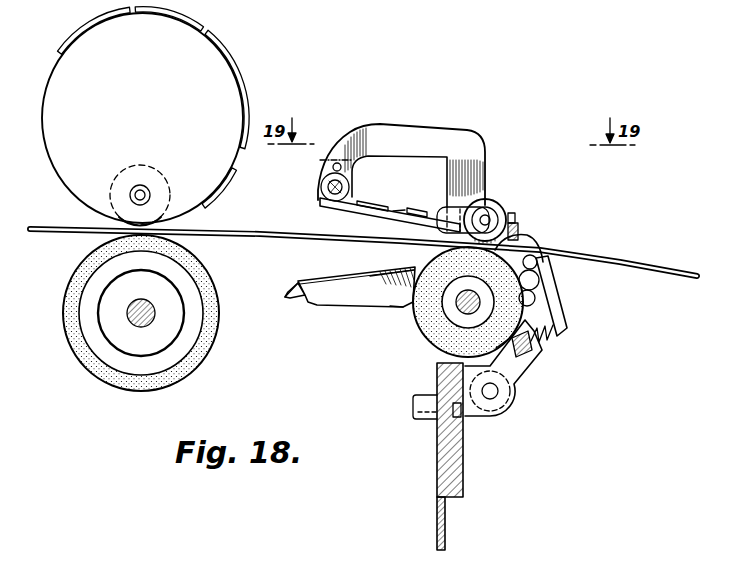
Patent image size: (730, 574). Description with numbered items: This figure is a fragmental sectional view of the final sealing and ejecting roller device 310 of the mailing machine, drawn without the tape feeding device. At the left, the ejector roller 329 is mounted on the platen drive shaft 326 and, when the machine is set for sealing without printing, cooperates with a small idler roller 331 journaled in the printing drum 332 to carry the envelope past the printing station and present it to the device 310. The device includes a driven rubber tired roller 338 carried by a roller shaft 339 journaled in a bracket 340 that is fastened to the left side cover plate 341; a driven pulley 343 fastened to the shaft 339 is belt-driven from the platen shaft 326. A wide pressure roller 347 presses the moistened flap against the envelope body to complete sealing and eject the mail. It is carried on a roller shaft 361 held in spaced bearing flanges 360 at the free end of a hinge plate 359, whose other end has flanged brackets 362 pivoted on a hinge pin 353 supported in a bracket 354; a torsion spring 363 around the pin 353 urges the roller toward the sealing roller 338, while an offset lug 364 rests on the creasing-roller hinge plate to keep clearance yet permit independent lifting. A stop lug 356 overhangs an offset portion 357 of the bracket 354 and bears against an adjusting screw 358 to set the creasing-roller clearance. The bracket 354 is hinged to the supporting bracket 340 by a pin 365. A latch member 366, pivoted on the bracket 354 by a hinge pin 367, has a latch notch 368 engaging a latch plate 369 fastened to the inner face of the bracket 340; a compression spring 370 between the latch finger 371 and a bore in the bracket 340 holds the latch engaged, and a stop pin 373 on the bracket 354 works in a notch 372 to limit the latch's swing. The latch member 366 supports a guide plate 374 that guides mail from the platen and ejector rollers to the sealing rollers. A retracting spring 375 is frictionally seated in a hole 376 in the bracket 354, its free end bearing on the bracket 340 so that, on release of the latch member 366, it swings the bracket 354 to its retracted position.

The final sealing and ejecting roller device 310 is at (311, 360).
The platen drive shaft 326 is at (134, 321).
The ejector roller 329 is at (216, 335).
The idler roller 331 is at (173, 224).
The printing drum 332 is at (210, 74).
The driven rubber tired roller 338 is at (448, 329).
The roller shaft 339 is at (437, 361).
The bracket 340 is at (464, 450).
The left side cover plate 341 is at (446, 527).
The driven pulley 343 is at (446, 311).
The pressure roller 347 is at (492, 218).
The hinge pin 353 is at (322, 203).
The bracket 354 is at (436, 137).
The stop lug 356 is at (515, 215).
The offset portion 357 is at (528, 242).
The adjusting screw 358 is at (518, 224).
The hinge plate 359 is at (393, 211).
The bearing flanges 360 is at (487, 212).
The roller shaft 361 is at (505, 208).
The flanged brackets 362 is at (357, 200).
The torsion spring 363 is at (353, 167).
The offset lug 364 is at (415, 213).
The pin 365 is at (500, 394).
The latch member 366 is at (345, 306).
The hinge pin 367 is at (536, 293).
The latch notch 368 is at (408, 292).
The latch plate 369 is at (428, 270).
The compression spring 370 is at (549, 342).
The latch finger 371 is at (560, 324).
The notch 372 is at (540, 279).
The stop pin 373 is at (538, 256).
The guide plate 374 is at (323, 278).
The retracting spring 375 is at (535, 363).
The hole 376 is at (513, 386).